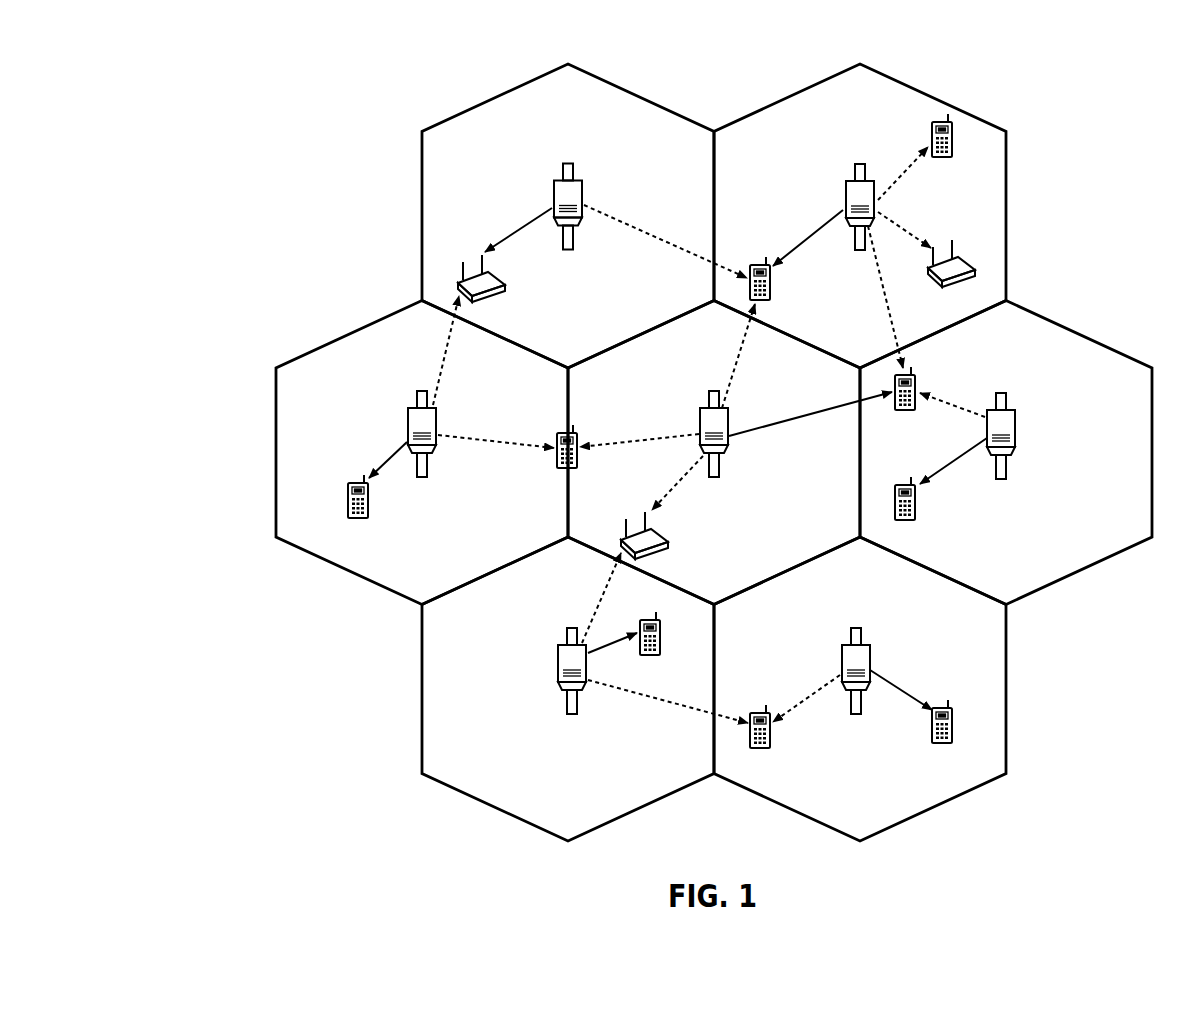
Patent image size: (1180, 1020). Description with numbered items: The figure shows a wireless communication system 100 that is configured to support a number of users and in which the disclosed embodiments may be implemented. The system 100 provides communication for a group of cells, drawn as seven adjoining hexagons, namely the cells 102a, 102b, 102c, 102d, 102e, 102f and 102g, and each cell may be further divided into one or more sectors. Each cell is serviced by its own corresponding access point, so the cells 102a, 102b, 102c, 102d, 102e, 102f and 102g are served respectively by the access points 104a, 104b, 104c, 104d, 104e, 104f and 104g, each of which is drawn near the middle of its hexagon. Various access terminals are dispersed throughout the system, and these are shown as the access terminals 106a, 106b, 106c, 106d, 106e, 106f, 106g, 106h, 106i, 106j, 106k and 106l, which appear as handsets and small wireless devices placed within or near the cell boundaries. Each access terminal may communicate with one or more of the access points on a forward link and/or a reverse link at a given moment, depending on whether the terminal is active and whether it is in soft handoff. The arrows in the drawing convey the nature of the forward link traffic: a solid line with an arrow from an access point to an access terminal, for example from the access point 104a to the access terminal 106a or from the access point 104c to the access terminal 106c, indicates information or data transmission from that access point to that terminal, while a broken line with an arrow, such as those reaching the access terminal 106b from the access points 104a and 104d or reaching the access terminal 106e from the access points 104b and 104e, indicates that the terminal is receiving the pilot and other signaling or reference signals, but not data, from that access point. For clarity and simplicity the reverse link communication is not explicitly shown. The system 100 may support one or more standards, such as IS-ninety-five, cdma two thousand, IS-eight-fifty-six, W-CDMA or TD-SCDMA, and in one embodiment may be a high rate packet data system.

The wireless communication system 100 is at (122, 120).
The cell 102a is at (495, 97).
The cell 102b is at (945, 82).
The cell 102c is at (352, 331).
The cell 102d is at (737, 340).
The cell 102e is at (1092, 320).
The cell 102f is at (422, 692).
The cell 102g is at (1006, 692).
The access point 104a is at (553, 182).
The access point 104b is at (844, 184).
The access point 104c is at (407, 414).
The access point 104d is at (699, 412).
The access point 104e is at (1016, 412).
The access point 104f is at (559, 647).
The access point 104g is at (841, 649).
The access terminal 106a is at (504, 278).
The access terminal 106b is at (760, 262).
The access terminal 106c is at (346, 498).
The access terminal 106d is at (556, 437).
The access terminal 106e is at (918, 381).
The access terminal 106f is at (643, 617).
The access terminal 106g is at (754, 707).
The access terminal 106h is at (947, 251).
The access terminal 106i is at (929, 126).
The access terminal 106j is at (668, 530).
The access terminal 106k is at (901, 482).
The access terminal 106l is at (942, 702).